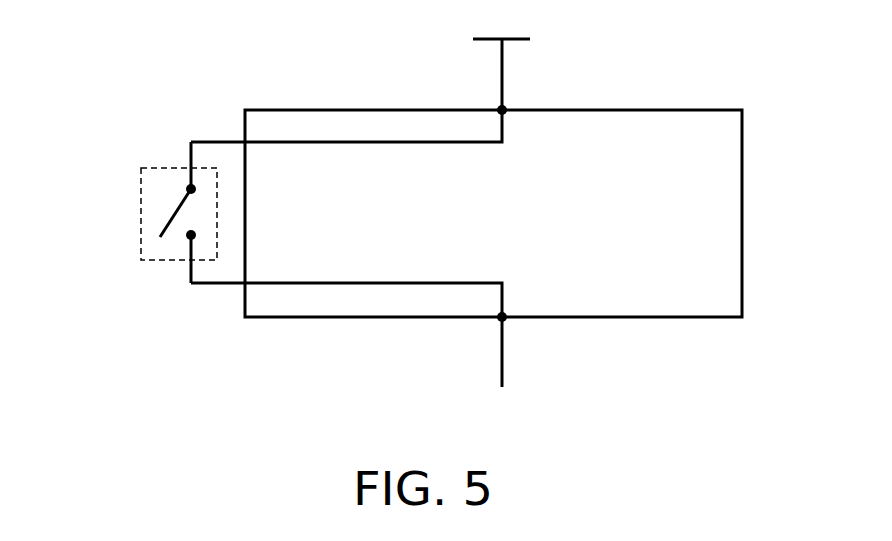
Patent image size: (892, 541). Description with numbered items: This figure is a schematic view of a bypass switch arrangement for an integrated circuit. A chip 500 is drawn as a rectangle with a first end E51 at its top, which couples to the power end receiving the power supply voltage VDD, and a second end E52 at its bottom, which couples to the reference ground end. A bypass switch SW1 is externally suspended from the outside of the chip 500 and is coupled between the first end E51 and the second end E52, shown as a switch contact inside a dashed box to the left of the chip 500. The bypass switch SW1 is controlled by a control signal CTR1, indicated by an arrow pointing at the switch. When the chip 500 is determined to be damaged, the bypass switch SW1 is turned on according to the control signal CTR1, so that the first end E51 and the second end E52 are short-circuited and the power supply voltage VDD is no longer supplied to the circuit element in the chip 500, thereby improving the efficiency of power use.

The chip 500 is at (744, 212).
The power supply voltage VDD is at (501, 56).
The first end E51 is at (505, 106).
The second end E52 is at (505, 321).
The bypass switch SW1 is at (165, 167).
The control signal CTR1 is at (138, 213).